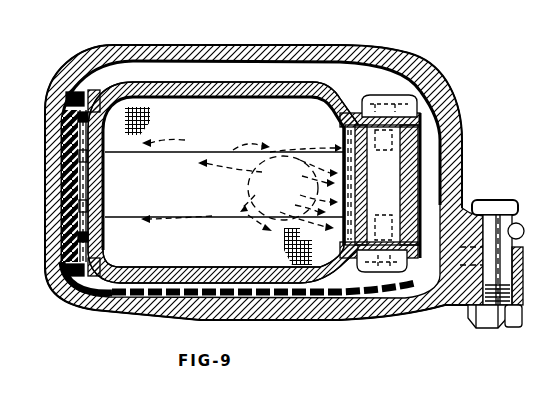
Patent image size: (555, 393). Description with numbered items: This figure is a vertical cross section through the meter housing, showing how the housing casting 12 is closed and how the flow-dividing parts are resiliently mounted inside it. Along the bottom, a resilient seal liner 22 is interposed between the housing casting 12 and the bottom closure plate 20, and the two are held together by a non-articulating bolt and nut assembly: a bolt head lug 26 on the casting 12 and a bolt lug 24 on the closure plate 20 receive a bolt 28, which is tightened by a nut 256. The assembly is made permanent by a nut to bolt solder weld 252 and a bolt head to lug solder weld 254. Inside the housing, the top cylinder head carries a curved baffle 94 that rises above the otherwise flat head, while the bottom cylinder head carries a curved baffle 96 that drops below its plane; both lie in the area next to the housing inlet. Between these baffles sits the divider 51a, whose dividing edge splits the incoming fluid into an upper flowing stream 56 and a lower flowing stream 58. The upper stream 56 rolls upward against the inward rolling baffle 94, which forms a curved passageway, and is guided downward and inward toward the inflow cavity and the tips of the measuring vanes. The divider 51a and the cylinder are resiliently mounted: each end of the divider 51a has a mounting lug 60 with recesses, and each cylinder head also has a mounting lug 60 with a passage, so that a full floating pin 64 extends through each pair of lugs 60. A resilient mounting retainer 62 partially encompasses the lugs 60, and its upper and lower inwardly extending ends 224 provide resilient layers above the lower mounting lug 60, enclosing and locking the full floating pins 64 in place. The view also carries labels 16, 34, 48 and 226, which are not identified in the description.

The housing casting 12 is at (457, 157).
The cover 16 is at (525, 205).
The bottom closure plate 20 is at (366, 306).
The resilient seal liner 22 is at (423, 281).
The bolt lug 24 is at (523, 292).
The bolt head lug 26 is at (524, 236).
The bolt 28 is at (513, 258).
The flange 34 is at (528, 148).
The transducer block 48 is at (528, 176).
The divider 51a is at (217, 192).
The upper flowing stream 56 is at (181, 138).
The lower flowing stream 58 is at (163, 224).
The mounting lug 60 is at (58, 164).
The resilient mounting retainer 62 is at (92, 202).
The full floating pin 64 is at (62, 122).
The curved baffle 94 is at (229, 86).
The curved baffle 96 is at (193, 281).
The inwardly extending ends 224 is at (82, 93).
The gasket 226 is at (99, 92).
The nut to bolt solder weld 252 is at (470, 324).
The bolt head to lug solder weld 254 is at (520, 213).
The nut 256 is at (513, 319).